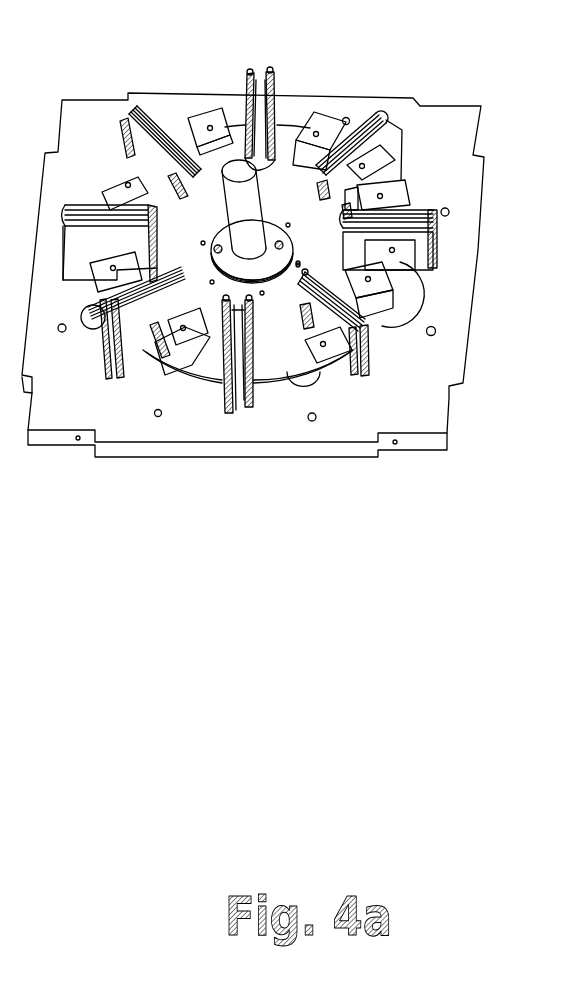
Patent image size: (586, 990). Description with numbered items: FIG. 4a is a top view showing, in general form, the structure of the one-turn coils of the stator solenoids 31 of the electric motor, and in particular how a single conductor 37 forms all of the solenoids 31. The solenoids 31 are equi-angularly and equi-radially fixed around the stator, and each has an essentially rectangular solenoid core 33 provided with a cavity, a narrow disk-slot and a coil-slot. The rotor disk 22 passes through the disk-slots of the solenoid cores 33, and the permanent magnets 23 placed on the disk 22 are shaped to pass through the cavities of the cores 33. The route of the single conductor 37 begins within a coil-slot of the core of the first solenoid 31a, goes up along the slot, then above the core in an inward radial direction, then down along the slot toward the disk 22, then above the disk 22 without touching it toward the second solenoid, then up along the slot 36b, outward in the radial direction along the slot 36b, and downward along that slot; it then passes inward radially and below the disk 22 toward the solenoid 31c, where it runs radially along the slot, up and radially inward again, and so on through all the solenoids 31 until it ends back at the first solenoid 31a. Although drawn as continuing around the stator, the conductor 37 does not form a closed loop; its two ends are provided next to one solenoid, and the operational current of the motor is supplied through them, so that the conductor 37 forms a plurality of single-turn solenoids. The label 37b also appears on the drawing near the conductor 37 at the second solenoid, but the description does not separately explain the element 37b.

The gripper finger unit 22 is at (116, 407).
The base plate 23 is at (273, 275).
The guide post 31 is at (200, 87).
The guide post 31a is at (295, 393).
The guide rail arm 31c is at (401, 140).
The guide rail arm 33 is at (127, 121).
The slider block 36b is at (448, 248).
The gripper finger 37 is at (186, 403).
The gripper rail unit 37b is at (440, 203).